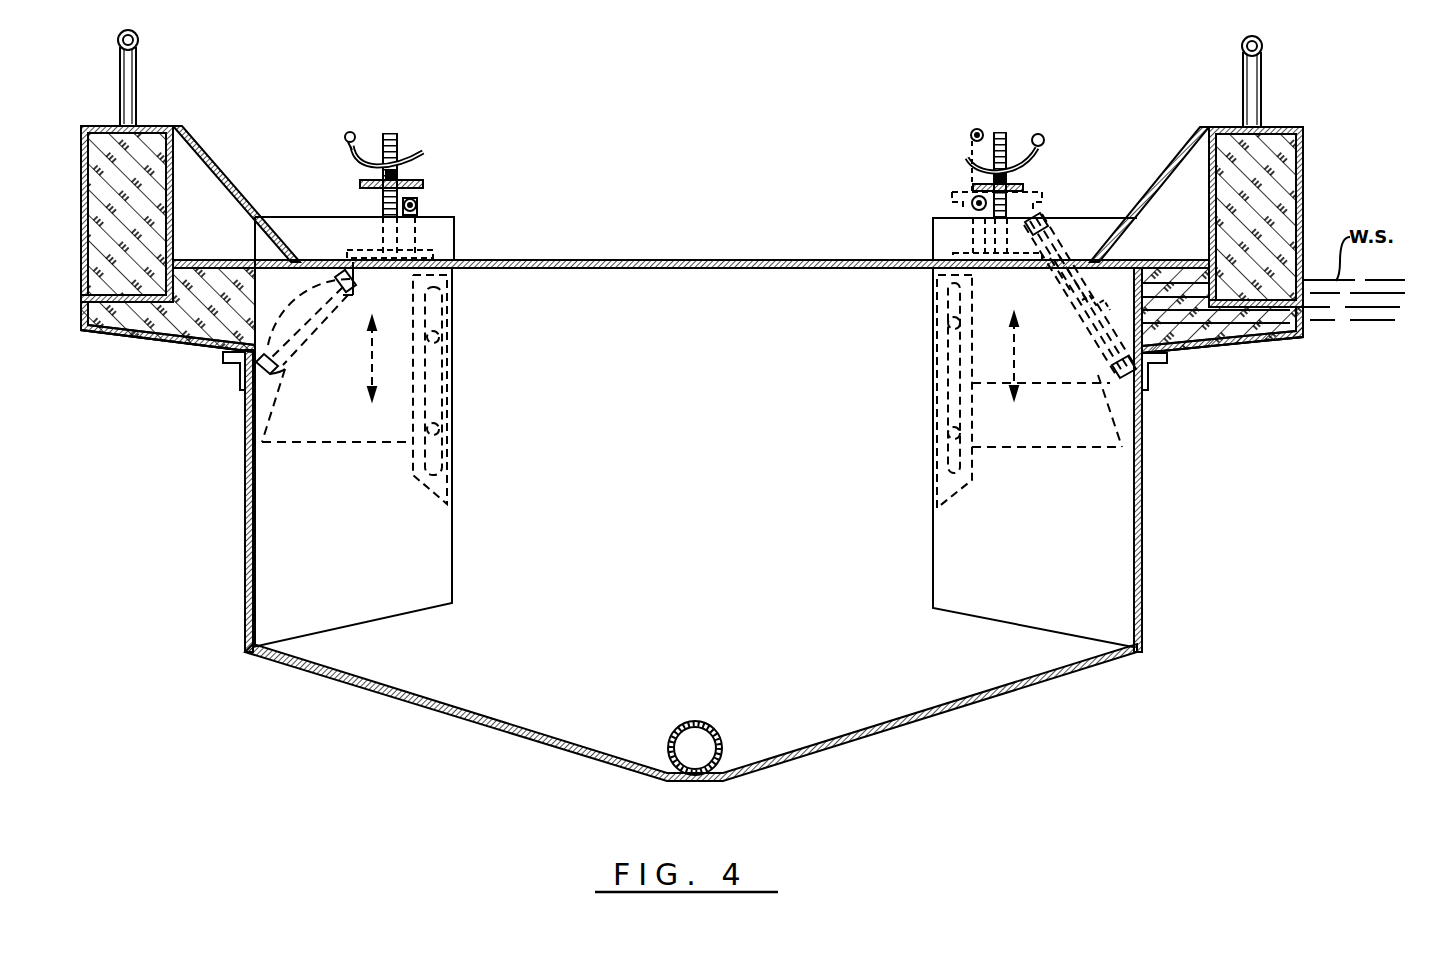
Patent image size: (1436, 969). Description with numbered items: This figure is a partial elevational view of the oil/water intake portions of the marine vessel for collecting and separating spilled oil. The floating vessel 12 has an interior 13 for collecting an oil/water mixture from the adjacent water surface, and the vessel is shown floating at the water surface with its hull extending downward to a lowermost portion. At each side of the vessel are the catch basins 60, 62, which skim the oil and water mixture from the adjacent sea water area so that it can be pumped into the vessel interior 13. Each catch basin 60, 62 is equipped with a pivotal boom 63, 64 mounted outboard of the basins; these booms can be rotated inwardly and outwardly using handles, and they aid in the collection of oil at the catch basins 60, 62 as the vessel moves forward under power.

The floating vessel 12 is at (1142, 528).
The interior 13 is at (676, 296).
The catch basin intake 60 is at (1090, 447).
The catch basin intake 62 is at (293, 443).
The pivotal boom 63 is at (1303, 150).
The pivotal boom 64 is at (157, 126).